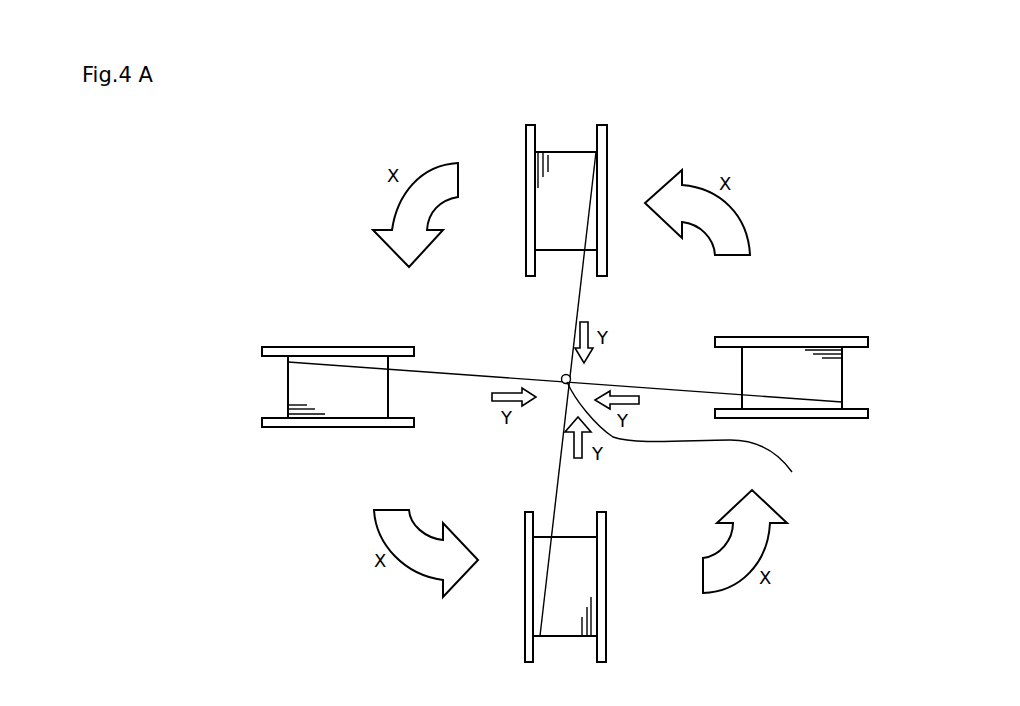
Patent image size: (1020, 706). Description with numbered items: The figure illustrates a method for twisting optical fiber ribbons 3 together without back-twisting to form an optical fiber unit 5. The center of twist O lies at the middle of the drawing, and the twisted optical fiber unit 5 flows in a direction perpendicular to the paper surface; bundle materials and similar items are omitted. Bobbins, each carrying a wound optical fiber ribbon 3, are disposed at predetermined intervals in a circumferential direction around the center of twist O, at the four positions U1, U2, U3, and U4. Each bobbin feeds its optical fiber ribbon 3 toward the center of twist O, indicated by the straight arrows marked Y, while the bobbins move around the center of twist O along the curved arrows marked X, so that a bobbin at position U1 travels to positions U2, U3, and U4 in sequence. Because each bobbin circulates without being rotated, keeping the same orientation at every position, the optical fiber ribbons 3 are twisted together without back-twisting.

The optical fiber ribbon 3 is at (654, 387).
The optical fiber unit 5 is at (688, 440).
The bobbin position U1 is at (566, 193).
The bobbin position U2 is at (319, 387).
The bobbin position U3 is at (565, 603).
The bobbin position U4 is at (815, 377).
The center of twist O is at (552, 368).